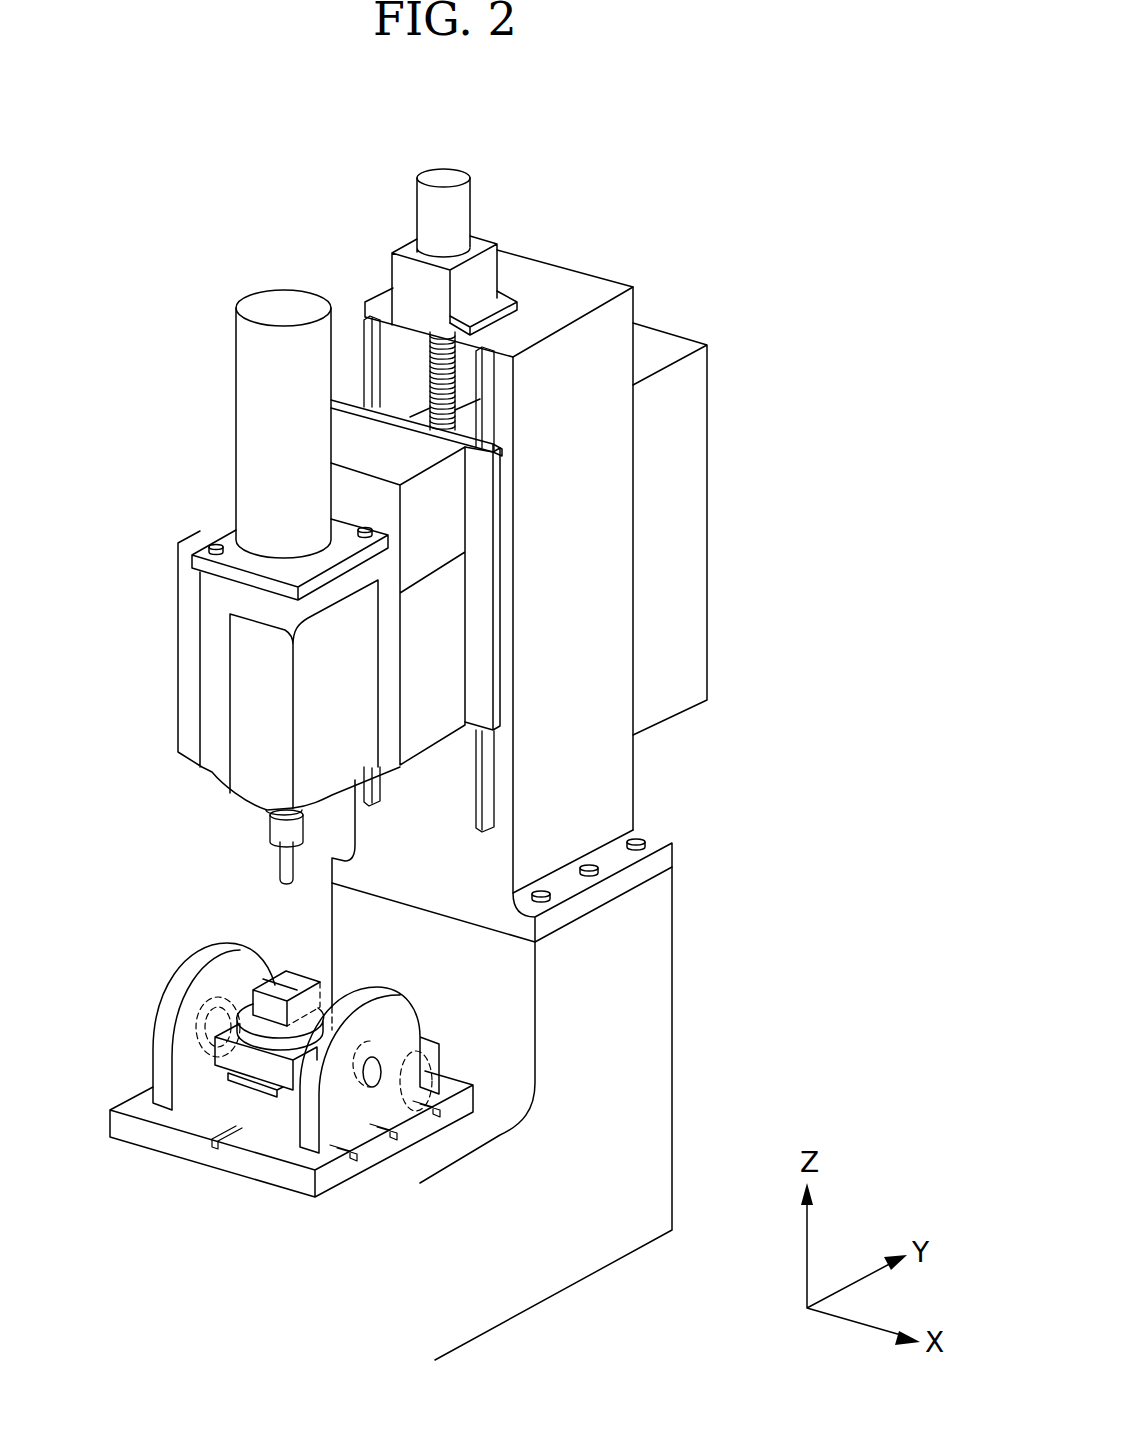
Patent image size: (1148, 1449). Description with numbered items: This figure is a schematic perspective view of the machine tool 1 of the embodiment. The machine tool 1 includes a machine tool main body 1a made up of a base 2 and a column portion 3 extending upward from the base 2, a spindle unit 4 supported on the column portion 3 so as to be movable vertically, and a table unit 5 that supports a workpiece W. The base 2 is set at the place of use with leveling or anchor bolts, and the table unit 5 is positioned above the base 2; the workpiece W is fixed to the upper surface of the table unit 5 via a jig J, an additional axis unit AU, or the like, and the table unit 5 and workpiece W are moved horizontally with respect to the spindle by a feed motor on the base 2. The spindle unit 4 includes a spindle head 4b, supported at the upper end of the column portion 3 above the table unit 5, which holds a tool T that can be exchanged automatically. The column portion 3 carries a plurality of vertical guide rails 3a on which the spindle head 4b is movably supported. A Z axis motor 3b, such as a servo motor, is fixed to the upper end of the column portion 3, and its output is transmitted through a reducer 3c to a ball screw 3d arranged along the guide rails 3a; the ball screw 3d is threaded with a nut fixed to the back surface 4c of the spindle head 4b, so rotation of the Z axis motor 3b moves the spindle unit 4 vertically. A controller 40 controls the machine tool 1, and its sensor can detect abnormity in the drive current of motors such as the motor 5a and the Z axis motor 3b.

The machine tool 1 is at (665, 155).
The machine tool main body 1a is at (635, 777).
The base 2 is at (570, 1162).
The column portion 3 is at (602, 497).
The guide rails 3a is at (368, 388).
The Z axis motor 3b is at (417, 196).
The reducer 3c is at (485, 268).
The ball screw 3d is at (432, 348).
The spindle unit 4 is at (325, 604).
The spindle head 4b is at (440, 657).
The back surface of the spindle head 4c is at (470, 432).
The table unit 5 is at (243, 1163).
The motor 5a is at (247, 300).
The controller 40 is at (707, 573).
The tool T is at (270, 827).
The workpiece W is at (278, 990).
The jig J is at (333, 993).
The additional axis unit AU is at (163, 975).